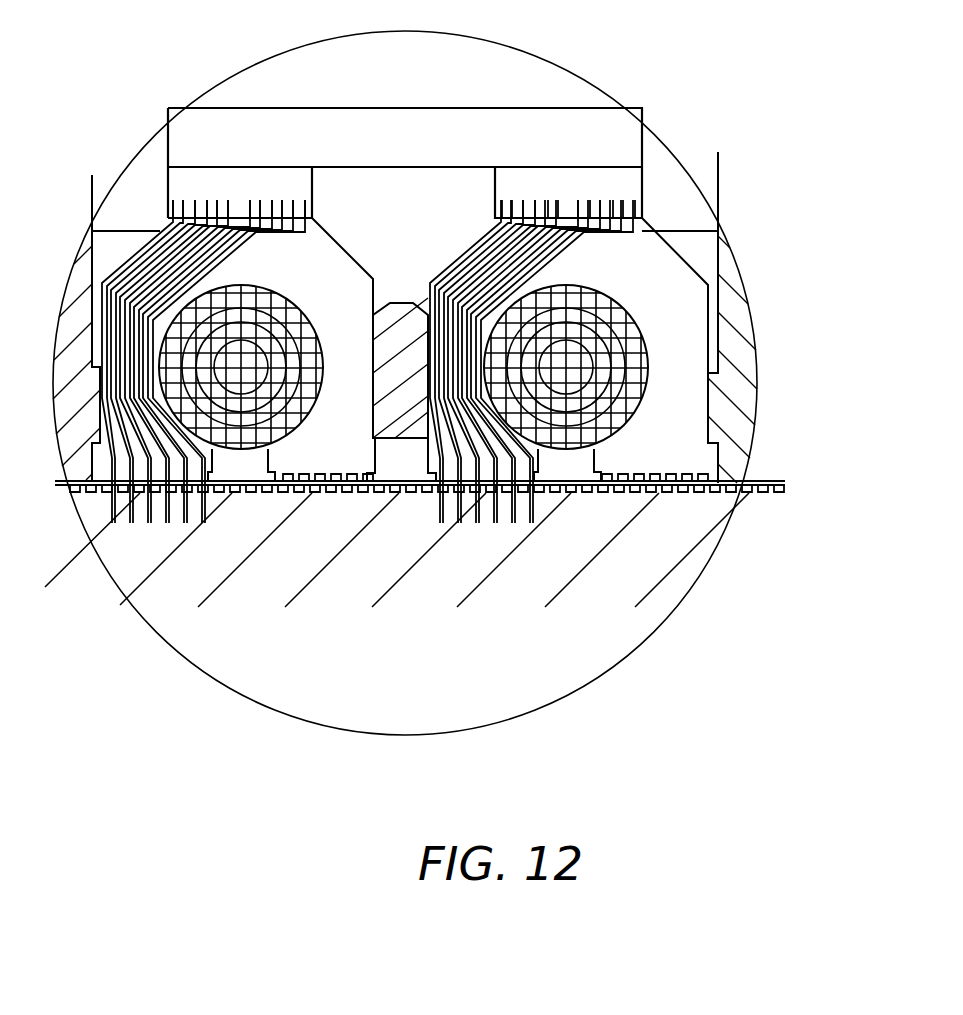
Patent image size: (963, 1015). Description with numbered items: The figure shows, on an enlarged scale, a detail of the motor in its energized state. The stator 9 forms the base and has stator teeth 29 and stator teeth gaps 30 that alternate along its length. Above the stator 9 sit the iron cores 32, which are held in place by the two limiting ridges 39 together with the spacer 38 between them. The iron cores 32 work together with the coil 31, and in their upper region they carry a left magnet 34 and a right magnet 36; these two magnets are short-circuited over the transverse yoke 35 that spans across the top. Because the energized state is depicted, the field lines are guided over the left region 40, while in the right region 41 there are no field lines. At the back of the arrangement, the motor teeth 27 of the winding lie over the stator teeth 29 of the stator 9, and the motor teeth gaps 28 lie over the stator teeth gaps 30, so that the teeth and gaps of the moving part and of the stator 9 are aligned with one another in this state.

The stator 9 is at (478, 590).
The motor teeth 27 is at (664, 472).
The motor teeth gaps 28 is at (632, 472).
The stator teeth 29 is at (706, 495).
The stator teeth gaps 30 is at (712, 493).
The coil 31 is at (278, 318).
The iron cores 32 is at (345, 280).
The left magnet 34 is at (222, 197).
The transverse yoke 35 is at (297, 122).
The right magnet 36 is at (568, 197).
The spacer 38 is at (400, 420).
The limiting ridges 39 is at (98, 413).
The left region 40 is at (157, 535).
The right region 41 is at (327, 501).